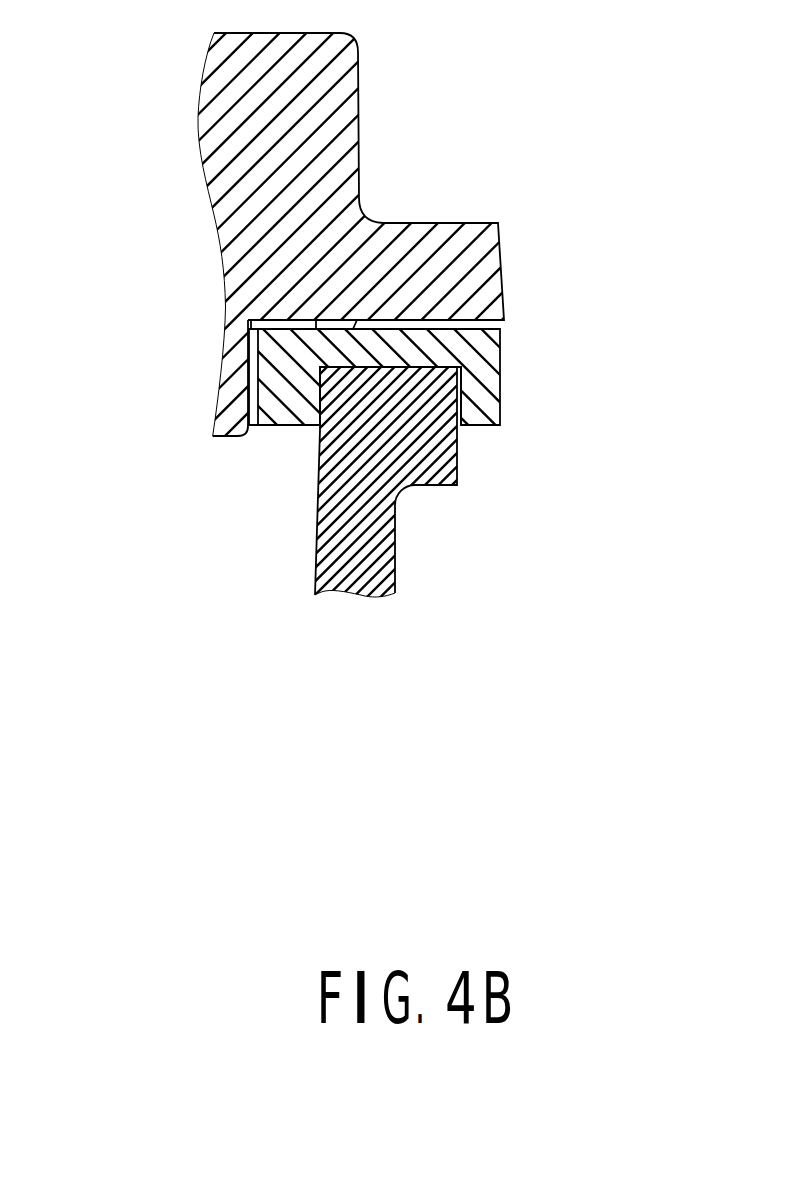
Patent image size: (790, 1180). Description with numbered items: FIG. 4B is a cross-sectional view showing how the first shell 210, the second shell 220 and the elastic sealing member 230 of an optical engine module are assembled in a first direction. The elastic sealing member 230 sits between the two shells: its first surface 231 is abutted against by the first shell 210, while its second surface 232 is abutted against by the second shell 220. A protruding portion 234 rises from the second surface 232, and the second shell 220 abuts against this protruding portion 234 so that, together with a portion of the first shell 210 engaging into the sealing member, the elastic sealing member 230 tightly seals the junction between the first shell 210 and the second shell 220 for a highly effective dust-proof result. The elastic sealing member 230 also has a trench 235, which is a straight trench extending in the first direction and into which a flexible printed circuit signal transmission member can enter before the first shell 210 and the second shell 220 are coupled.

The first shell 210 is at (430, 458).
The second shell 220 is at (478, 273).
The elastic sealing member 230 is at (484, 378).
The first surface 231 is at (430, 418).
The second surface 232 is at (487, 322).
The protruding portion 234 is at (380, 327).
The trench 235 is at (231, 387).